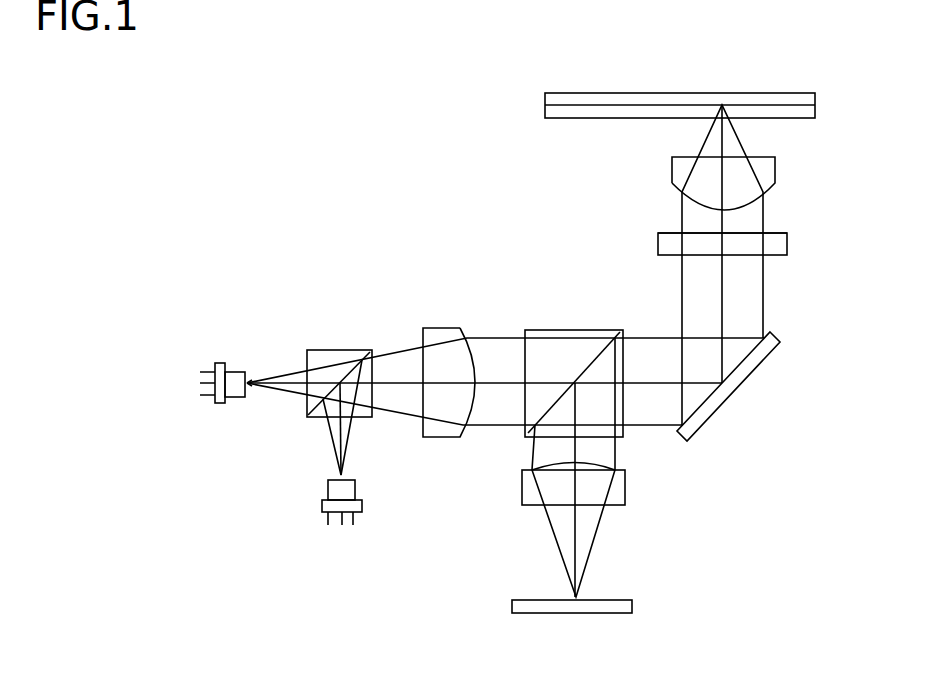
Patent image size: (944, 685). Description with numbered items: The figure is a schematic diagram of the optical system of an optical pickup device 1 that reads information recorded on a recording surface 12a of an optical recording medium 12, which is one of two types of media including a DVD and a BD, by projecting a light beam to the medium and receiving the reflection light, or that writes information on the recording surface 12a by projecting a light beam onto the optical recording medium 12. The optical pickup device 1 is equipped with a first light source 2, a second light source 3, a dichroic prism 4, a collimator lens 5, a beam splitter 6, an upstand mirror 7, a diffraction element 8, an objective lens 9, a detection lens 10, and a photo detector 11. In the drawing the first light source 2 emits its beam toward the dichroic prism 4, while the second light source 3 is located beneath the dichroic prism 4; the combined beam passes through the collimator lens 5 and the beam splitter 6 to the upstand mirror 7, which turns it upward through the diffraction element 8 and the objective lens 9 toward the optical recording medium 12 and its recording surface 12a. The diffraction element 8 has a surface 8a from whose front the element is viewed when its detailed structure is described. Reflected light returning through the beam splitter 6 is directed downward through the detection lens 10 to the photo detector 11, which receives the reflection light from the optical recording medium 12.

The optical pickup device 1 is at (450, 210).
The first light source 2 is at (217, 363).
The second light source 3 is at (360, 510).
The dichroic prism 4 is at (347, 348).
The collimator lens 5 is at (443, 327).
The beam splitter 6 is at (573, 328).
The upstand mirror 7 is at (725, 400).
The diffraction element 8 is at (775, 255).
The surface of diffraction element 8a is at (668, 232).
The objective lens 9 is at (768, 185).
The detection lens 10 is at (620, 505).
The photo detector 11 is at (618, 613).
The optical recording medium 12 is at (792, 118).
The recording surface 12a is at (555, 105).